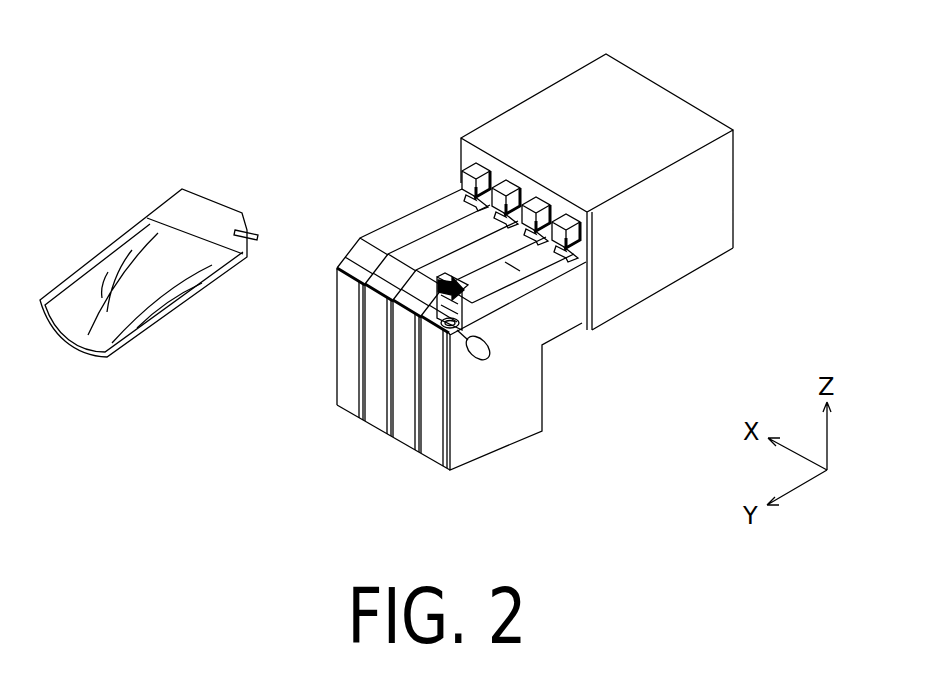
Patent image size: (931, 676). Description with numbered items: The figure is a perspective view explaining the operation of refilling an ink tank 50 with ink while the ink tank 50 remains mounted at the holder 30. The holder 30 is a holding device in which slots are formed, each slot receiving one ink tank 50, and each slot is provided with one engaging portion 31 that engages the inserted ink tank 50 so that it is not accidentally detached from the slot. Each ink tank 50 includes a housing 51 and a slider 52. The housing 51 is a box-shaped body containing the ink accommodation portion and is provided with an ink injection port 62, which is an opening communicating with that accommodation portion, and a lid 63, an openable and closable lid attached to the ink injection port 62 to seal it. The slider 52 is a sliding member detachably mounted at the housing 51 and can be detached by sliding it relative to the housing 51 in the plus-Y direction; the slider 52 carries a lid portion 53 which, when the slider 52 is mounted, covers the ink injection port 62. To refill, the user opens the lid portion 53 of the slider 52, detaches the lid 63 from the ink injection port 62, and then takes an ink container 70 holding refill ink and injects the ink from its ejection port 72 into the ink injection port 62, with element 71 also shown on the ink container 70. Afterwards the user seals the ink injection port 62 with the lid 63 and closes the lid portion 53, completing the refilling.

The holder 30 is at (673, 226).
The engaging portion 31 is at (563, 200).
The ink tank 50 is at (335, 367).
The housing 51 is at (552, 410).
The slider 52 is at (503, 270).
The lid portion 53 is at (450, 278).
The ink injection port 62 is at (455, 330).
The lid 63 is at (489, 352).
The ink container 70 is at (175, 255).
The window portion 71 is at (165, 273).
The ejection port 72 is at (260, 238).